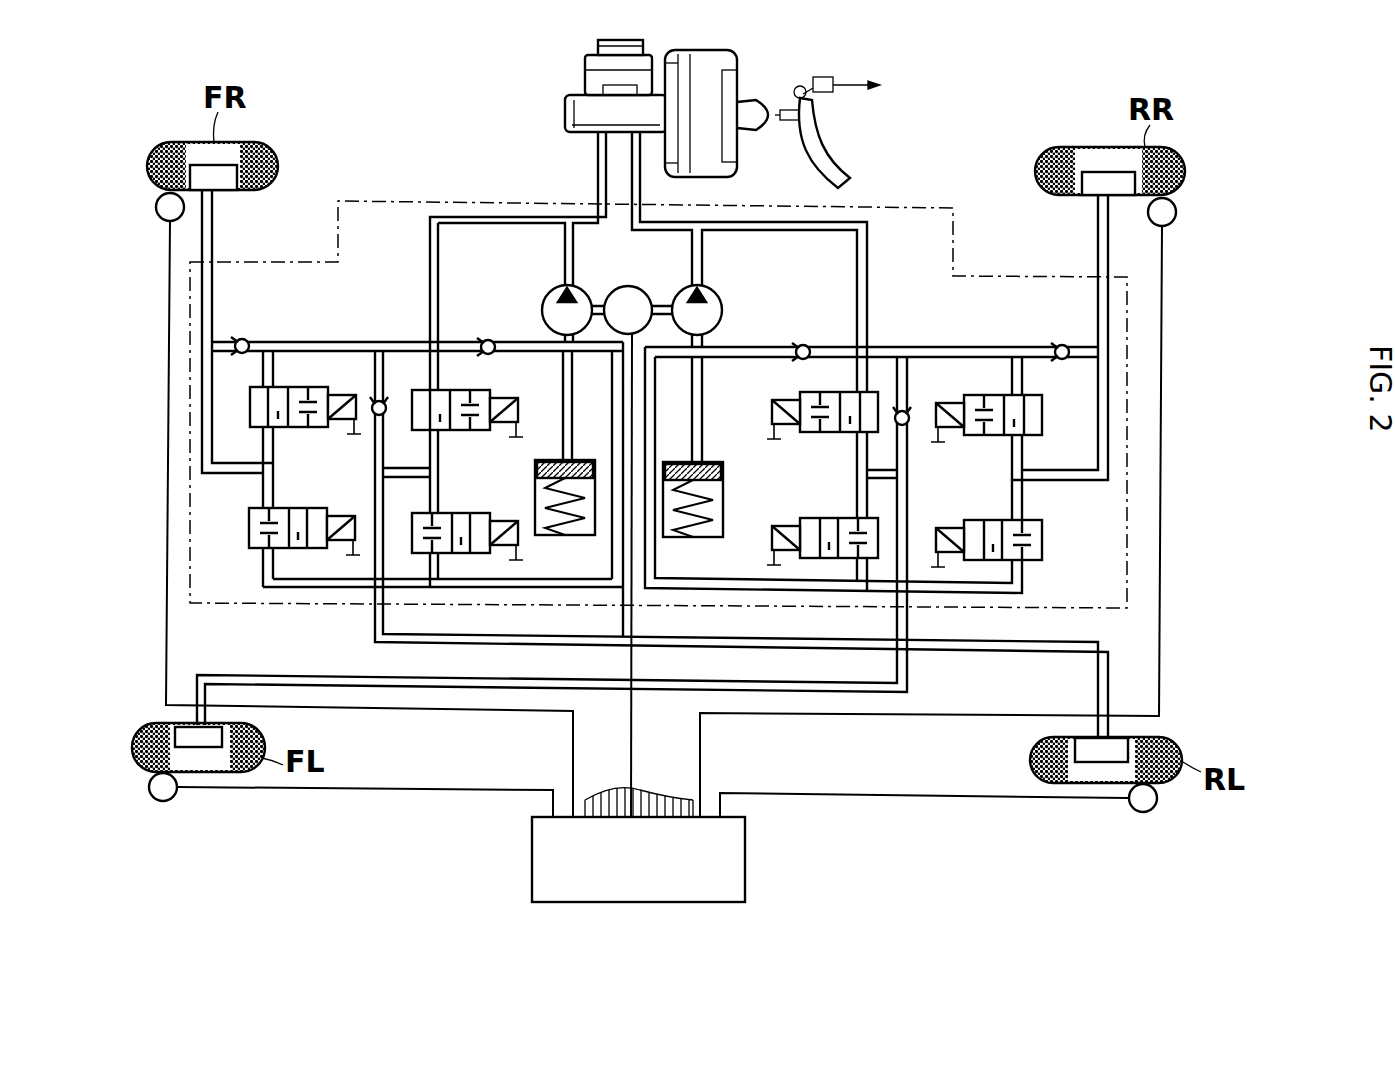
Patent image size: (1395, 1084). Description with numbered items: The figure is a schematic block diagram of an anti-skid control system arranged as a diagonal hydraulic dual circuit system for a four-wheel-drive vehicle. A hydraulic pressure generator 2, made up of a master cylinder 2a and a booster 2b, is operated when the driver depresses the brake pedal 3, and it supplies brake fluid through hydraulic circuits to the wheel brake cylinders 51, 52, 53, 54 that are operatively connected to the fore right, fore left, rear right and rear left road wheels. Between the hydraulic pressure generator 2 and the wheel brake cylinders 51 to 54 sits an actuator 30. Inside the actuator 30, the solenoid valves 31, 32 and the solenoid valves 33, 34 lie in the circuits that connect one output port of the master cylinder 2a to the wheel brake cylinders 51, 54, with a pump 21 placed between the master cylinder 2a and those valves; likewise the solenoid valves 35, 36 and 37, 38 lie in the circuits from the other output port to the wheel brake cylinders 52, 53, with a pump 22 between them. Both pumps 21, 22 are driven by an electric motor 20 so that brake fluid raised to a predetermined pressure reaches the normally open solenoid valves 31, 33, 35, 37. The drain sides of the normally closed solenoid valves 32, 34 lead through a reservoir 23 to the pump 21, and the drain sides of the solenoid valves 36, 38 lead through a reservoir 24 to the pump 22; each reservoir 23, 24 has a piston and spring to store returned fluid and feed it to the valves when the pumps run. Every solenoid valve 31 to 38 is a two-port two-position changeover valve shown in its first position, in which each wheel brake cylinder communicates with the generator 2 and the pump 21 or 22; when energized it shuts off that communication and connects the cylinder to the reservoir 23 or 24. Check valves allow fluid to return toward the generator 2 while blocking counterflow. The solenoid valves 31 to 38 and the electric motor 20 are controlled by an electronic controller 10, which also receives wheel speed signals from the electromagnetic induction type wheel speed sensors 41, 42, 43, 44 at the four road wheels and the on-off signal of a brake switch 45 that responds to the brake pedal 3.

The hydraulic pressure generator 2 is at (583, 104).
The master cylinder 2a is at (572, 131).
The booster 2b is at (728, 176).
The brake pedal 3 is at (814, 138).
The electronic controller 10 is at (748, 866).
The electric motor 20 is at (633, 287).
The pump 21 is at (561, 287).
The pump 22 is at (722, 300).
The reservoir 23 is at (551, 536).
The reservoir 24 is at (686, 536).
The actuator 30 is at (924, 206).
The solenoid valve 31 is at (300, 388).
The solenoid valve 32 is at (318, 508).
The solenoid valve 33 is at (490, 392).
The solenoid valve 34 is at (481, 513).
The solenoid valve 35 is at (806, 392).
The solenoid valve 36 is at (786, 518).
The solenoid valve 37 is at (982, 395).
The solenoid valve 38 is at (966, 520).
The wheel speed sensor 41 is at (158, 216).
The wheel speed sensor 42 is at (176, 798).
The wheel speed sensor 43 is at (1174, 222).
The wheel speed sensor 44 is at (1130, 806).
The brake switch 45 is at (830, 78).
The wheel brake cylinder 51 is at (222, 180).
The wheel brake cylinder 52 is at (236, 730).
The wheel brake cylinder 53 is at (1092, 186).
The wheel brake cylinder 54 is at (1082, 741).